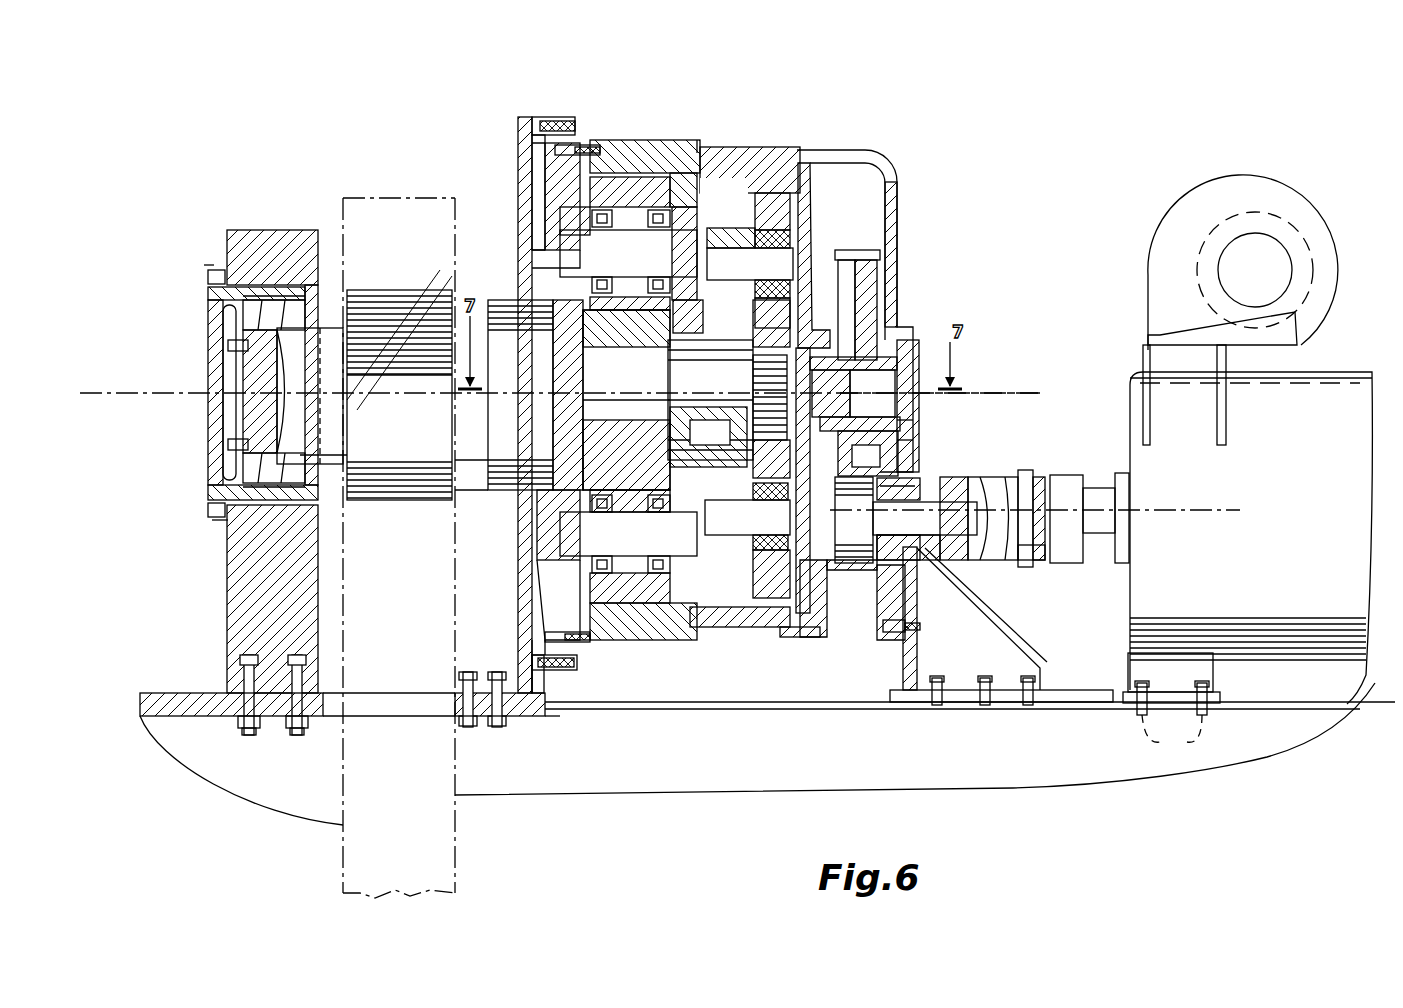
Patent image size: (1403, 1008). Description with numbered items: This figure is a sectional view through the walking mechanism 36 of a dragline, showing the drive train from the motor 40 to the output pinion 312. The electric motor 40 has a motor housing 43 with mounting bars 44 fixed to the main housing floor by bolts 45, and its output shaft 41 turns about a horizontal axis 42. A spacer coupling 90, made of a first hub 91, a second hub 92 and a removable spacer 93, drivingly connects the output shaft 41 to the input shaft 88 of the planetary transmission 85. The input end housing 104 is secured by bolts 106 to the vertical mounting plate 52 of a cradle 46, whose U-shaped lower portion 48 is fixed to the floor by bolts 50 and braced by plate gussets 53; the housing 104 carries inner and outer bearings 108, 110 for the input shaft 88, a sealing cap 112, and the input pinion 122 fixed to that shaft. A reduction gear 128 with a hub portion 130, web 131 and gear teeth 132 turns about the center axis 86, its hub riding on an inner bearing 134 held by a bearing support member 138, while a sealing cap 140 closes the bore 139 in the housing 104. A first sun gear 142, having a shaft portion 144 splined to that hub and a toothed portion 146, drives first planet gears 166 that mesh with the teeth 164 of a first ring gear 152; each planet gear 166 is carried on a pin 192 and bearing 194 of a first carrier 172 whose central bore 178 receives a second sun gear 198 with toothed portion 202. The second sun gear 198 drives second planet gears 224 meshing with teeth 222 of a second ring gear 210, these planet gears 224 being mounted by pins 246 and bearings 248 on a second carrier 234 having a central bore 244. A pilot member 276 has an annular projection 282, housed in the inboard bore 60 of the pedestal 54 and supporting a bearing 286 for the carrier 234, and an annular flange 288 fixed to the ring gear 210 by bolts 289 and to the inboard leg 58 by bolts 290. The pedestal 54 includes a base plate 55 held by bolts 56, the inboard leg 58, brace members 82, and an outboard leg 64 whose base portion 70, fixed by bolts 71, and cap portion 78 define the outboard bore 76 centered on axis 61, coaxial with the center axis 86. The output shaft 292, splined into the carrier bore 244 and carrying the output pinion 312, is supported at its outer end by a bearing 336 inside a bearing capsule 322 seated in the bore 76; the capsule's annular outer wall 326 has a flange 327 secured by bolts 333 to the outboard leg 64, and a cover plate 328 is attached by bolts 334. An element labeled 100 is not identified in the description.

The walking mechanism 36 is at (1018, 148).
The motor 40 is at (1283, 545).
The output shaft 41 is at (1103, 490).
The horizontal axis 42 is at (1216, 508).
The motor housing 43 is at (1333, 376).
The mounting bars 44 is at (1190, 668).
The bolts 45 is at (1172, 718).
The cradle 46 is at (1050, 660).
The lower portion 48 is at (965, 700).
The bolts 50 is at (988, 676).
The vertical mounting plate 52 is at (902, 658).
The plate gussets 53 is at (1010, 642).
The pedestal 54 is at (505, 100).
The base plate 55 is at (548, 700).
The bolts 56 is at (518, 670).
The inboard leg 58 is at (517, 124).
The inboard bore 60 is at (522, 270).
The horizontal axis 61 is at (110, 392).
The outboard leg 64 is at (262, 235).
The base portion 70 is at (226, 598).
The bolts 71 is at (290, 751).
The outboard bore 76 is at (326, 300).
The cap portion 78 is at (312, 235).
The brace members 82 is at (520, 170).
The planetary transmission 85 is at (925, 192).
The center axis 86 is at (1030, 392).
The input shaft 88 is at (952, 519).
The spacer coupling 90 is at (1056, 440).
The first hub 91 is at (1066, 562).
The second hub 92 is at (960, 475).
The spacer 93 is at (1022, 484).
The gear 100 is at (716, 407).
The input end housing 104 is at (878, 168).
The bolts 106 is at (925, 628).
The inner bearing 108 is at (854, 520).
The outer bearing 110 is at (916, 480).
The sealing cap 112 is at (950, 562).
The input pinion 122 is at (862, 562).
The reduction gear 128 is at (874, 278).
The hub portion 130 is at (905, 414).
The web 131 is at (860, 294).
The gear teeth 132 is at (872, 255).
The inner bearing 134 is at (872, 393).
The bearing support member 138 is at (812, 218).
The bore 139 is at (905, 345).
The sealing cap 140 is at (913, 438).
The first sun gear 142 is at (771, 389).
The shaft portion 144 is at (831, 393).
The toothed portion 146 is at (716, 384).
The first ring gear 152 is at (760, 160).
The gear teeth 164 is at (748, 205).
The first planet gears 166 is at (805, 206).
The first carrier 172 is at (700, 316).
The central bore 178 is at (708, 440).
The pin 192 is at (768, 274).
The bearing 194 is at (812, 240).
The second sun gear 198 is at (640, 384).
The toothed portion 202 is at (640, 407).
The second ring gear 210 is at (640, 170).
The gear teeth 222 is at (650, 165).
The second planet gears 224 is at (630, 175).
The second carrier 234 is at (462, 490).
The central bore 244 is at (522, 320).
The pin 246 is at (680, 253).
The bearings 248 is at (612, 253).
The pilot member 276 is at (470, 500).
The annular projection 282 is at (444, 275).
The bearing 286 is at (520, 535).
The annular flange 288 is at (560, 665).
The bolts 289 is at (544, 637).
The bolts 290 is at (582, 127).
The output shaft 292 is at (452, 420).
The output pinion 312 is at (418, 401).
The bearing capsule 322 is at (183, 428).
The annular outer wall 326 is at (330, 505).
The radial flange 327 is at (220, 524).
The cover plate 328 is at (232, 450).
The bolts 333 is at (210, 272).
The bolts 334 is at (207, 292).
The bearing 336 is at (242, 328).